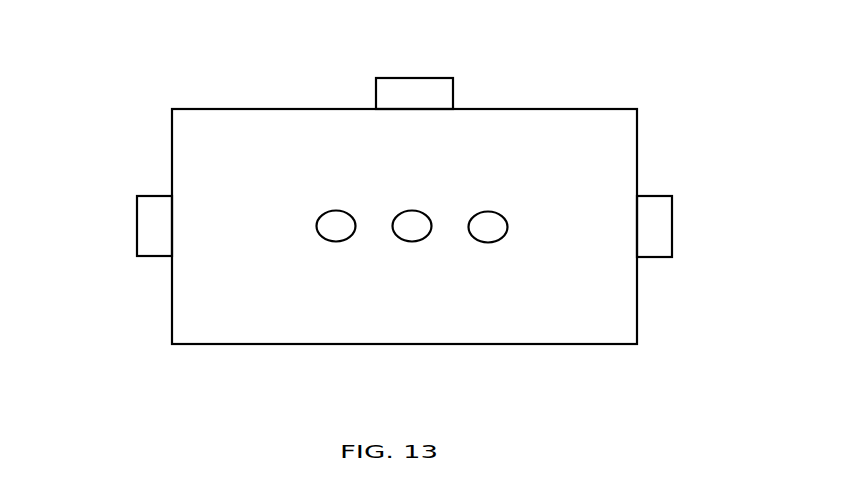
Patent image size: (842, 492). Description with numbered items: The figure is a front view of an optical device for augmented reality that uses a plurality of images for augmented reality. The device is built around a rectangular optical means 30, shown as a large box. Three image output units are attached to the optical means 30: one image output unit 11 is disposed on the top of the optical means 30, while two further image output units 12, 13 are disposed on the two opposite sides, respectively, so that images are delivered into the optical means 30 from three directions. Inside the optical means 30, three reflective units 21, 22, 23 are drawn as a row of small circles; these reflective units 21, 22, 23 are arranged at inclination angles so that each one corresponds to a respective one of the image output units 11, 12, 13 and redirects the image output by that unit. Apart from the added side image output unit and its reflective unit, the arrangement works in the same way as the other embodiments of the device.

The optical means 30 is at (637, 120).
The image output unit 11 is at (436, 78).
The image output unit 12 is at (137, 222).
The image output unit 13 is at (672, 225).
The reflective unit 21 is at (333, 241).
The reflective unit 22 is at (413, 241).
The reflective unit 23 is at (500, 238).